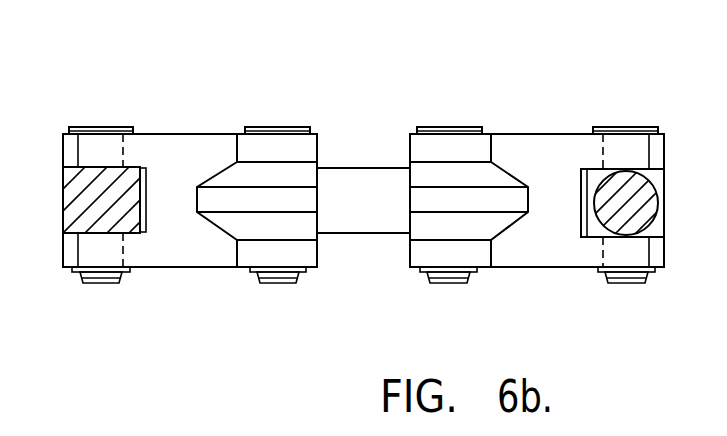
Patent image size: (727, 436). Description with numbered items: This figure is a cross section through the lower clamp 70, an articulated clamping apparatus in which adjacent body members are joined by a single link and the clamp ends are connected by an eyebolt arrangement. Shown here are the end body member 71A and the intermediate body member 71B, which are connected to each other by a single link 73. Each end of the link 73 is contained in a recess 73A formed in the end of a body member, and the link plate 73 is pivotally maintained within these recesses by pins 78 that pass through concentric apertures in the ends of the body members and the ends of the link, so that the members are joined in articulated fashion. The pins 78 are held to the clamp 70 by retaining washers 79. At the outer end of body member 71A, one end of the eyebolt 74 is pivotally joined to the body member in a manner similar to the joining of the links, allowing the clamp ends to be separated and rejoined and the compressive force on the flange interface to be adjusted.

The lower clamp 70 is at (118, 65).
The end body member 71A is at (537, 134).
The intermediate body member 71B is at (190, 134).
The link 73 is at (63, 205).
The recess 73A is at (146, 224).
The eyebolt 74 is at (653, 182).
The pin 78 is at (85, 127).
The retaining washer 79 is at (70, 277).